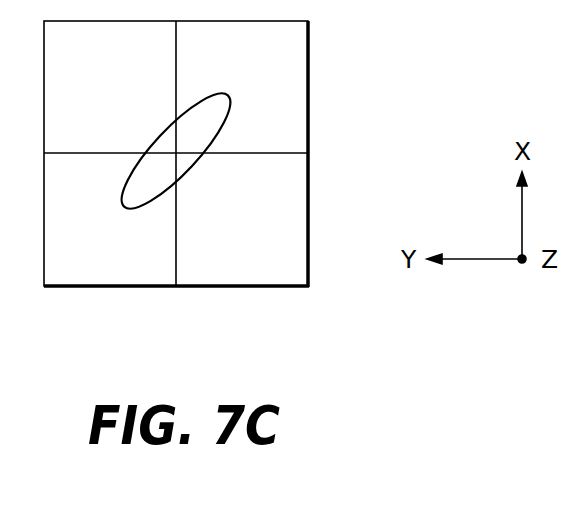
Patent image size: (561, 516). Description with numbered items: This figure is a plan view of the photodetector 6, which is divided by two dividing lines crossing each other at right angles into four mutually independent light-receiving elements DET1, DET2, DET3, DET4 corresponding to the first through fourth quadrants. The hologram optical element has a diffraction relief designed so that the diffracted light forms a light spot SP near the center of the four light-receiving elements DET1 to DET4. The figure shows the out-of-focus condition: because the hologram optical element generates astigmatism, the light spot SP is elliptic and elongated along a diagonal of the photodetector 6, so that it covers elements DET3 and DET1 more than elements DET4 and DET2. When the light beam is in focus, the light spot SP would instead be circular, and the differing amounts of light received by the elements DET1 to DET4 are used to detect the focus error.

The photodetector 6 is at (197, 287).
The light spot SP is at (230, 118).
The light-receiving element DET1 is at (262, 44).
The light-receiving element DET2 is at (262, 264).
The light-receiving element DET3 is at (91, 264).
The light-receiving element DET4 is at (91, 44).